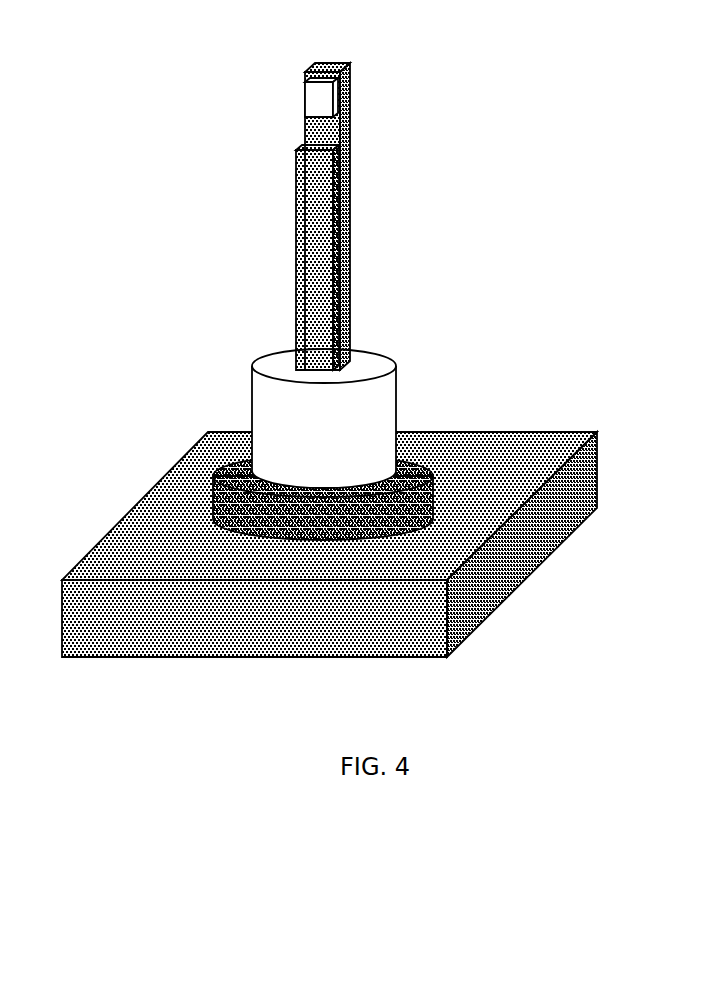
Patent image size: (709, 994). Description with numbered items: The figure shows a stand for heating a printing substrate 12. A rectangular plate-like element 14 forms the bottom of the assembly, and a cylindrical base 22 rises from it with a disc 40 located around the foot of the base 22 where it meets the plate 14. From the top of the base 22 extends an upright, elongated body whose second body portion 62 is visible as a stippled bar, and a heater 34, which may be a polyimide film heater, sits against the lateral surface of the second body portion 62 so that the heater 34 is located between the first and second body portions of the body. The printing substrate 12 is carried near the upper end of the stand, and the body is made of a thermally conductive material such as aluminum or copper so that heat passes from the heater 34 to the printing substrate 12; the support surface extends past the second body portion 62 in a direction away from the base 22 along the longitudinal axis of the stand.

The printing substrate 12 is at (318, 102).
The base block 14 is at (533, 520).
The base 22 is at (358, 443).
The heater 34 is at (350, 215).
The disc 40 is at (433, 487).
The second body portion 62 is at (304, 196).